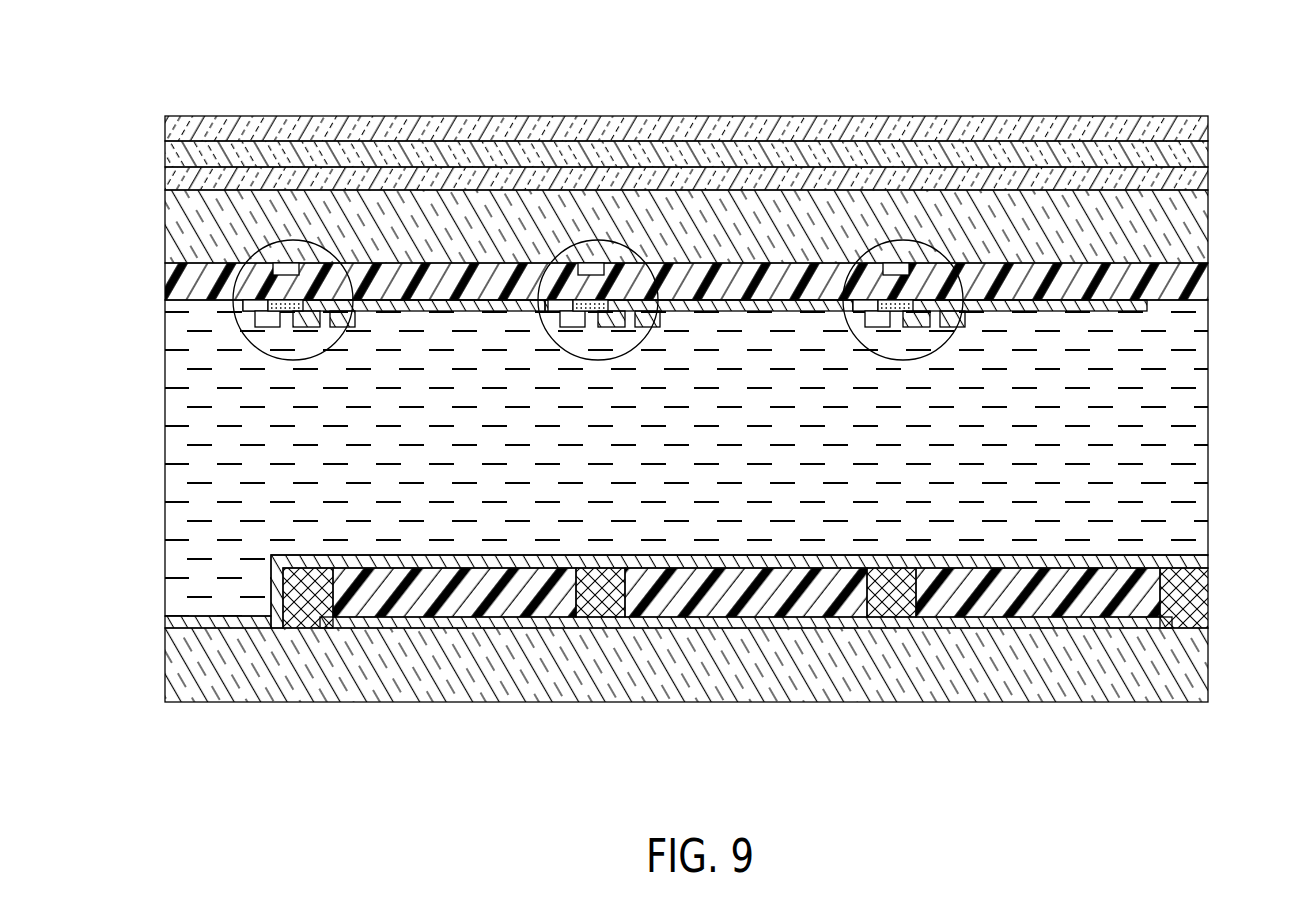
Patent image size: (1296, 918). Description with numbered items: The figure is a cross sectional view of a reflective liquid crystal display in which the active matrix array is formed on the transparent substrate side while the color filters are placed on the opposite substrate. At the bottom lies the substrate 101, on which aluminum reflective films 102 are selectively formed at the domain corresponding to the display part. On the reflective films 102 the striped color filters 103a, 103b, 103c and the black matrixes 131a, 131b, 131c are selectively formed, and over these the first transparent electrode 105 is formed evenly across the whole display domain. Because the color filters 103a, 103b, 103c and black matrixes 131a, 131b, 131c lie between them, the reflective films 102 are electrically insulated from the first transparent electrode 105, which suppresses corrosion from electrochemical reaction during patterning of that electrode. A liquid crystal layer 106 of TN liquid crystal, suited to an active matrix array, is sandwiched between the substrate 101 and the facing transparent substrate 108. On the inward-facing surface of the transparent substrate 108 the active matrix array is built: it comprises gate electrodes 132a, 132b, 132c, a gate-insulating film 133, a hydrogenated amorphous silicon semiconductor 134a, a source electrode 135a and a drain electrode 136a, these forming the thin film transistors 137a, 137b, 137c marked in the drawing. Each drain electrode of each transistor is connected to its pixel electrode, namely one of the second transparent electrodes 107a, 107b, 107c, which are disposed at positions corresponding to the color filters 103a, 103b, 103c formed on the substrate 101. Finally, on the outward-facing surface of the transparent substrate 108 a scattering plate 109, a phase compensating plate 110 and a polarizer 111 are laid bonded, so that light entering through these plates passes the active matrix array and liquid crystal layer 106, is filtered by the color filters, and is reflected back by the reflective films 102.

The substrate 101 is at (1200, 690).
The reflective film 102 is at (1112, 627).
The striped color filter 103a is at (440, 602).
The striped color filter 103b is at (760, 593).
The striped color filter 103c is at (1013, 592).
The first transparent electrode 105 is at (1183, 554).
The liquid crystal layer 106 is at (1183, 443).
The second transparent electrode 107a is at (503, 312).
The second transparent electrode 107b is at (793, 312).
The second transparent electrode 107c is at (1043, 312).
The transparent substrate 108 is at (1208, 208).
The scattering plate 109 is at (1208, 177).
The phase compensating plate 110 is at (1208, 144).
The polarizer 111 is at (1208, 116).
The black matrix 131a is at (308, 593).
The black matrix 131b is at (596, 593).
The black matrix 131c is at (897, 593).
The gate electrode 132a is at (283, 263).
The gate electrode 132b is at (588, 263).
The gate electrode 132c is at (893, 263).
The gate-insulating film 133 is at (1208, 277).
The hydrogenated amorphous silicon semiconductor 134a is at (288, 313).
The source electrode 135a is at (262, 328).
The drain electrode 136a is at (310, 327).
The first thin film transistor 137a is at (252, 238).
The second thin film transistor 137b is at (635, 363).
The third thin film transistor 137c is at (945, 362).